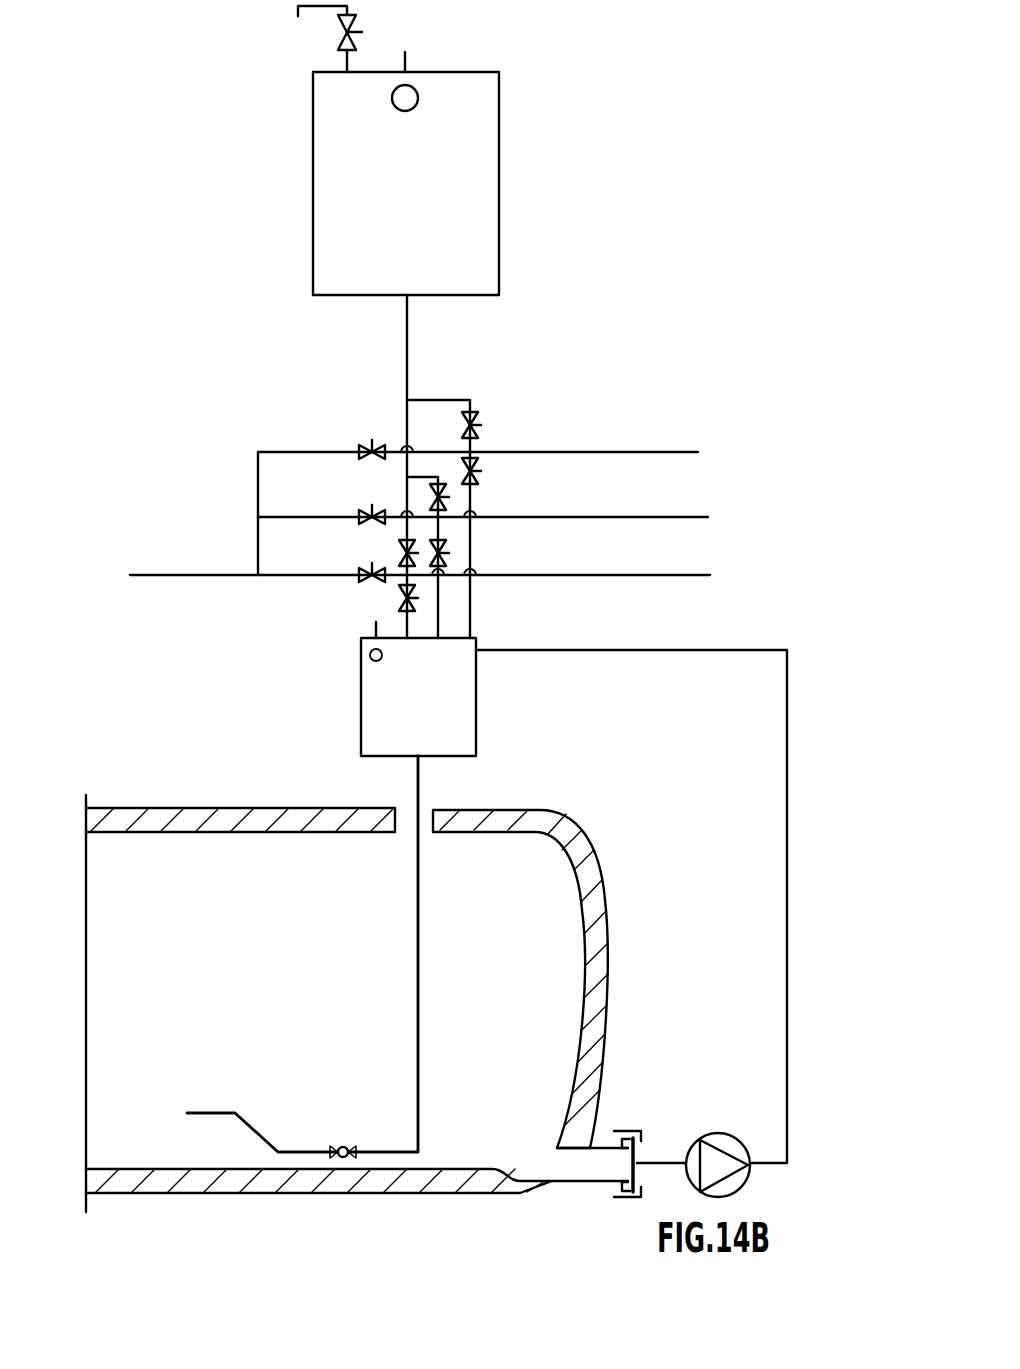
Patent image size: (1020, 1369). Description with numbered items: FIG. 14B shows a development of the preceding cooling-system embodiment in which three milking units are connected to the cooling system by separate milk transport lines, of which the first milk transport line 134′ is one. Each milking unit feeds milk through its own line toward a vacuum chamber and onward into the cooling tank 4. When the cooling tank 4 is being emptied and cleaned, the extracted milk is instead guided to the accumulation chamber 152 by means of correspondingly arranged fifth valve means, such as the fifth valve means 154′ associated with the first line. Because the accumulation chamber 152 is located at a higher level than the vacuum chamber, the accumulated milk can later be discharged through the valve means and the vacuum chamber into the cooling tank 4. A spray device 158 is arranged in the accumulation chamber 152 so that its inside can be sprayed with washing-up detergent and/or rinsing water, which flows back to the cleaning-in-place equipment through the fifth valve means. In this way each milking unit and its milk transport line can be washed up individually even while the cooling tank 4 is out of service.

The cooling tank 4 is at (266, 804).
The accumulation chamber 152 is at (448, 219).
The spray device 158 is at (408, 112).
The first milk transport line 134′ is at (702, 580).
The fifth valve means 154′ is at (400, 551).